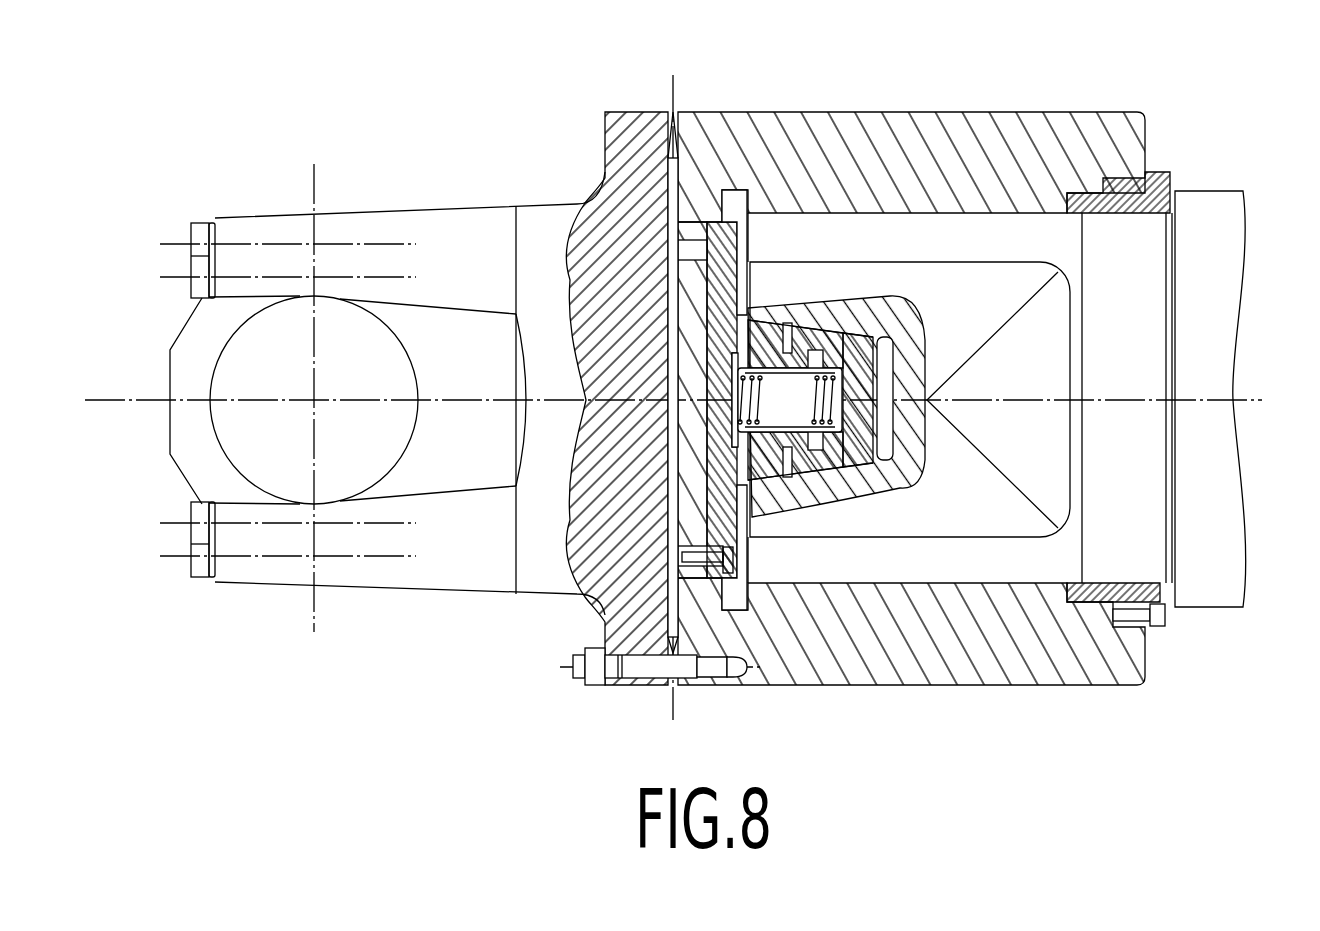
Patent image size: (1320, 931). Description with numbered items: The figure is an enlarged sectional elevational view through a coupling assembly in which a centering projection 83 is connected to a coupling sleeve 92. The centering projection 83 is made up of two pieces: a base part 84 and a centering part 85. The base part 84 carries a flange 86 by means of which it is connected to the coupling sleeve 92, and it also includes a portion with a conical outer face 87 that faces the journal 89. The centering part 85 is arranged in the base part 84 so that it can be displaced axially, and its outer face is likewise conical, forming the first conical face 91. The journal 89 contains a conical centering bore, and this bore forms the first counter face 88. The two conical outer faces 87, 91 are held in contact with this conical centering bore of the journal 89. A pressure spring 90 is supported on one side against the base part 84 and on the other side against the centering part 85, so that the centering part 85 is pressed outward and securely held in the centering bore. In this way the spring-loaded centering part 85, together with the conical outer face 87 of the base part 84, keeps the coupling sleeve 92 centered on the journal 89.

The centering projection 83 is at (790, 325).
The base part 84 is at (706, 276).
The centering part 85 is at (868, 350).
The flange 86 is at (712, 330).
The conical outer face 87 is at (767, 480).
The first counter face 88 is at (855, 458).
The journal 89 is at (1015, 568).
The pressure spring 90 is at (837, 388).
The first conical face 91 is at (833, 327).
The coupling sleeve 92 is at (948, 135).